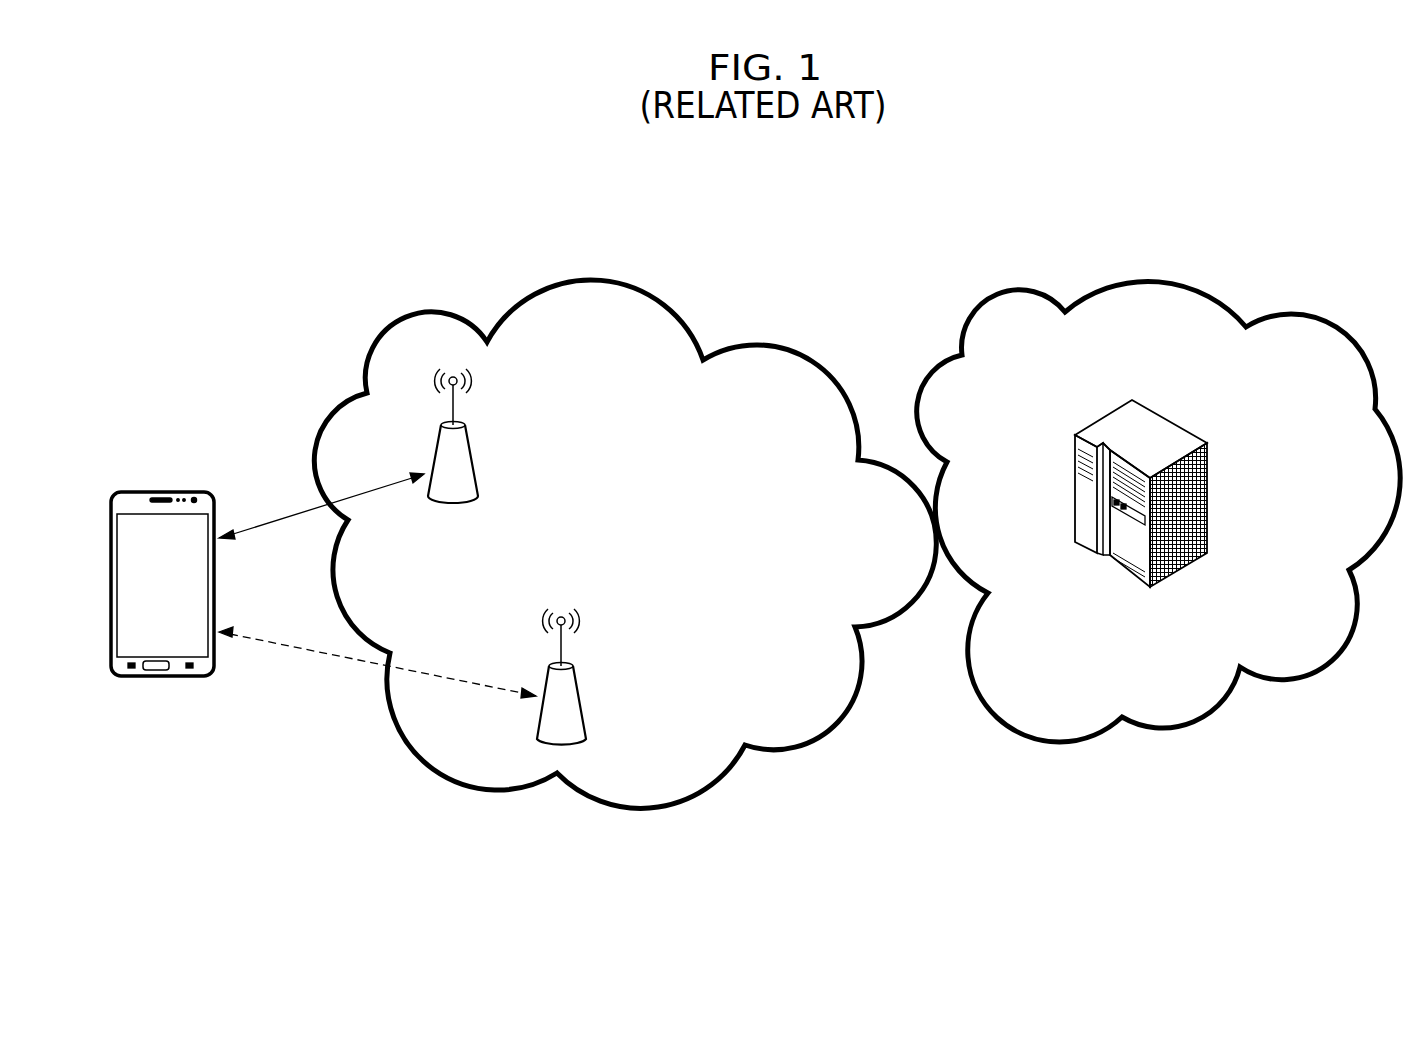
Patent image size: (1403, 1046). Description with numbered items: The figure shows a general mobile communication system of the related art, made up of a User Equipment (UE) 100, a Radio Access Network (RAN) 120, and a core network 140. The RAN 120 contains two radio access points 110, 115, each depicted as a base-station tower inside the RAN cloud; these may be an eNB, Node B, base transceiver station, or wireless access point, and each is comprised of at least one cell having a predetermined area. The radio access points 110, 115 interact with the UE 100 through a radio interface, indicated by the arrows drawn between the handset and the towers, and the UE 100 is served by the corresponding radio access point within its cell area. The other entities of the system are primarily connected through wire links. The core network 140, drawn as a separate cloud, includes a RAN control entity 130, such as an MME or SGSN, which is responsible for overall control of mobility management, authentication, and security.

The User Equipment (UE) 100 is at (162, 492).
The radio access point 110 is at (476, 459).
The radio access point 115 is at (585, 699).
The Radio Access Network (RAN) 120 is at (652, 290).
The RAN control entity 130 is at (1209, 497).
The core network 140 is at (1163, 272).